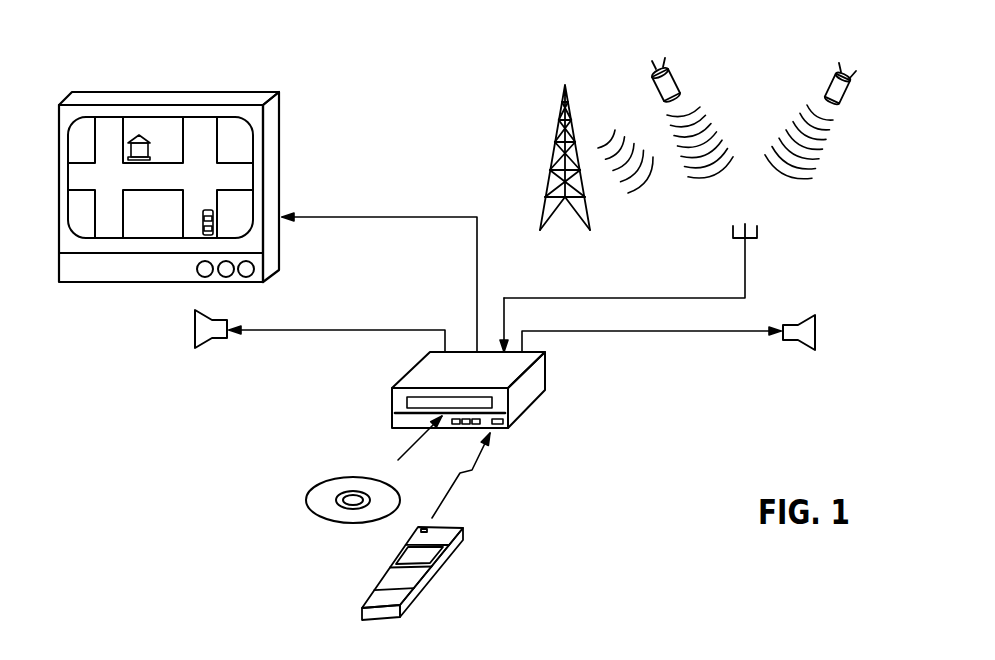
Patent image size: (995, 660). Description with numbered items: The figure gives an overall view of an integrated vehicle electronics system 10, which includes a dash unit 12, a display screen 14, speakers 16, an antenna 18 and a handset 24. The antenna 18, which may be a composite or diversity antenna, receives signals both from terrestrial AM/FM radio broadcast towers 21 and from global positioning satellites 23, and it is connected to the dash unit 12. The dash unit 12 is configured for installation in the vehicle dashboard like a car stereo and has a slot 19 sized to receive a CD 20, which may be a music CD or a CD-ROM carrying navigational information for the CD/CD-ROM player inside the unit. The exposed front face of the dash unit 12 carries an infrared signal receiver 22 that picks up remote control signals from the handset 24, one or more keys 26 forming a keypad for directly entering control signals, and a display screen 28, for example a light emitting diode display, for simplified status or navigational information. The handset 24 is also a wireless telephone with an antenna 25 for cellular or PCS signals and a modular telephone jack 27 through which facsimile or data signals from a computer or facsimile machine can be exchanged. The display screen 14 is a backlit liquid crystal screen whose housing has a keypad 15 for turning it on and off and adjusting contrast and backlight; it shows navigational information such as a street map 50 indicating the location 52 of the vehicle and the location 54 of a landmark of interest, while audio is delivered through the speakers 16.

The integrated vehicle electronics system 10 is at (664, 431).
The dash unit 12 is at (468, 407).
The display screen 14 is at (193, 174).
The keypad 15 is at (205, 277).
The speakers 16 is at (200, 348).
The antenna 18 is at (745, 272).
The slot 19 is at (391, 407).
The CD 20 is at (332, 477).
The terrestrial AM/FM radio broadcast towers 21 is at (567, 93).
The infrared signal receiver 22 is at (497, 425).
The global positioning satellites 23 is at (668, 70).
The handset 24 is at (428, 556).
The antenna 25 is at (462, 528).
The keys 26 is at (456, 425).
The modular telephone jack 27 is at (421, 589).
The display screen 28 is at (448, 402).
The street map 50 is at (198, 138).
The location 52 is at (208, 210).
The location 54 is at (143, 138).